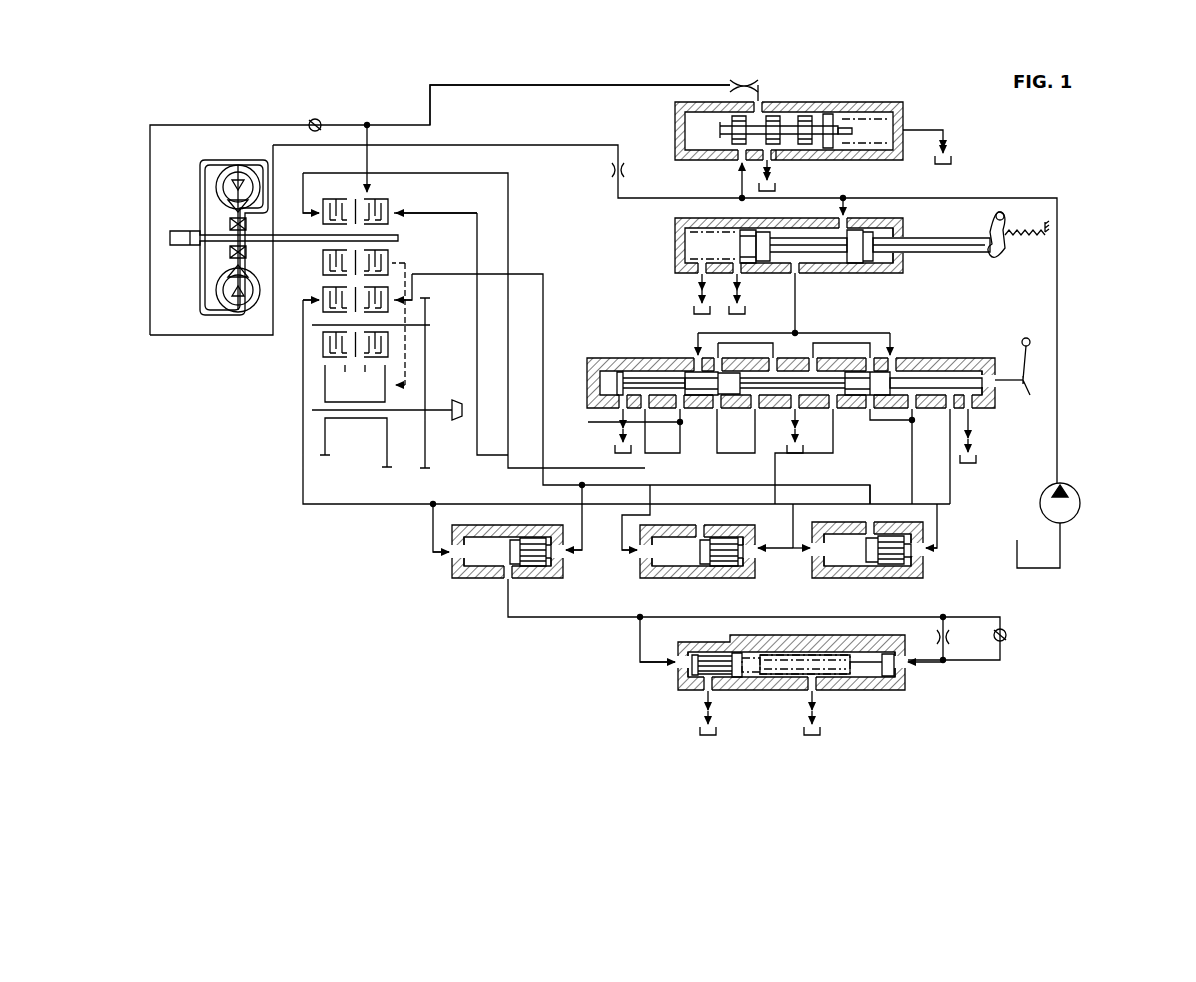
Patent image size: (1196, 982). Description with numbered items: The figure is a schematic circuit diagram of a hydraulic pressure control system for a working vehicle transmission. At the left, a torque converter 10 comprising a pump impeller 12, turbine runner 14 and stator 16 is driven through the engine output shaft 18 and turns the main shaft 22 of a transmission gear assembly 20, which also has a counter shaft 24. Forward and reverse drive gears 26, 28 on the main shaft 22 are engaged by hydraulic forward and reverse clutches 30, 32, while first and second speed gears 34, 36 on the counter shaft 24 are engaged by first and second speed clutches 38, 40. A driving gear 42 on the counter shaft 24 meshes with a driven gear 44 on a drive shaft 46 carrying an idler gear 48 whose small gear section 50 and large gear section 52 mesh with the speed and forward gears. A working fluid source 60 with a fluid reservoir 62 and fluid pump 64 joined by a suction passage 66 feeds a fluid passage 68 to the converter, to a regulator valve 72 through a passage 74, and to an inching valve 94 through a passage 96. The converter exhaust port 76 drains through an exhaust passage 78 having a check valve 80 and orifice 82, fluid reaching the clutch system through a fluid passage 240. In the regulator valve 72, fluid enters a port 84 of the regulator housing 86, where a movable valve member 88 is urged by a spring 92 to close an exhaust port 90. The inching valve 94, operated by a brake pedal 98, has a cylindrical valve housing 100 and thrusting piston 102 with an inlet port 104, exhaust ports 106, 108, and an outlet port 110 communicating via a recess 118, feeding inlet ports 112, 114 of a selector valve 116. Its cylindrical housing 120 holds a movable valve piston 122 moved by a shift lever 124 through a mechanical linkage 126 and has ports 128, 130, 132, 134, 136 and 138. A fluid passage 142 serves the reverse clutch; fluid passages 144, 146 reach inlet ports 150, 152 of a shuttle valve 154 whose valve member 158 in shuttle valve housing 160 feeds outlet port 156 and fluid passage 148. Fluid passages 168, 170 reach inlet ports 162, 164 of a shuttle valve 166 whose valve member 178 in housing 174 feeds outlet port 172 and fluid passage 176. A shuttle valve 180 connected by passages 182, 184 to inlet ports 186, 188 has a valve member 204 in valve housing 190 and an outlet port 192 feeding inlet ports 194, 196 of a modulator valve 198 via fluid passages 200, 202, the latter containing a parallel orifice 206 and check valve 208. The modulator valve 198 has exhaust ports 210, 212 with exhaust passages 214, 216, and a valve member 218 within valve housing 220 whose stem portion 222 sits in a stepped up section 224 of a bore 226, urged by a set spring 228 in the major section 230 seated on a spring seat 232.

The torque converter 10 is at (238, 150).
The pump impeller 12 is at (262, 300).
The turbine runner 14 is at (216, 186).
The stator 16 is at (226, 264).
The output shaft 18 is at (172, 243).
The transmission gear assembly 20 is at (386, 200).
The main shaft 22 is at (310, 243).
The counter shaft 24 is at (490, 354).
The forward drive gear 26 is at (394, 202).
The reverse drive gear 28 is at (304, 200).
The forward drive clutch 30 is at (372, 197).
The reverse drive clutch 32 is at (345, 200).
The first speed gear 34 is at (322, 316).
The second speed gear 36 is at (392, 298).
The first speed clutch 38 is at (355, 383).
The second speed clutch 40 is at (370, 358).
The driving gear 42 is at (428, 316).
The driven gear 44 is at (430, 386).
The drive shaft 46 is at (389, 422).
The idler gear 48 is at (358, 430).
The small gear section 50 is at (325, 432).
The large gear section 52 is at (388, 400).
The working fluid source 60 is at (1118, 528).
The fluid reservoir 62 is at (692, 308).
The fluid pump 64 is at (1081, 503).
The suction passage 66 is at (1040, 508).
The fluid passage 68 is at (565, 148).
The regulator valve 72 is at (820, 100).
The passage 74 is at (735, 186).
The exhaust port 76 is at (233, 262).
The exhaust passage 78 is at (250, 124).
The check valve 80 is at (318, 118).
The orifice 82 is at (744, 76).
The port 84 is at (770, 110).
The regulator housing 86 is at (876, 100).
The movable valve member 88 is at (790, 150).
The exhaust port 90 is at (770, 176).
The spring 92 is at (916, 126).
The inching valve 94 is at (910, 218).
The passage 96 is at (835, 236).
The brake pedal 98 is at (1012, 242).
The cylindrical valve housing 100 is at (885, 264).
The thrusting piston 102 is at (840, 264).
The inlet port 104 is at (848, 208).
The exhaust port 106 is at (744, 280).
The exhaust port 108 is at (696, 274).
The outlet port 110 is at (794, 314).
The inlet port 112 is at (690, 368).
The inlet port 114 is at (904, 360).
The selector valve 116 is at (865, 356).
The recess 118 is at (775, 232).
The cylindrical housing 120 is at (592, 372).
The movable valve piston 122 is at (642, 370).
The shift lever 124 is at (1035, 362).
The mechanical linkage 126 is at (1007, 368).
The forward drive port 128 is at (686, 430).
The reverse drive port 130 is at (913, 421).
The forward, first speed port 132 is at (648, 412).
The reverse, first speed port 134 is at (972, 416).
The forward second speed port 136 is at (722, 412).
The reverse, second speed port 138 is at (520, 326).
The fluid passage 142 is at (514, 410).
The fluid passage 144 is at (651, 500).
The fluid passage 146 is at (953, 478).
The fluid passage 148 is at (302, 470).
The inlet port 150 is at (646, 552).
The inlet port 152 is at (758, 554).
The shuttle valve 154 is at (742, 525).
The outlet port 156 is at (703, 524).
The valve member 158 is at (718, 568).
The shuttle valve housing 160 is at (656, 578).
The inlet port 162 is at (826, 534).
The inlet port 164 is at (930, 550).
The shuttle valve 166 is at (834, 580).
The fluid passage 168 is at (798, 496).
The fluid passage 170 is at (940, 505).
The outlet port 172 is at (882, 534).
The housing 174 is at (905, 566).
The fluid passage 176 is at (546, 330).
The valve member 178 is at (886, 565).
The shuttle valve 180 is at (490, 522).
The passage 182 is at (430, 532).
The passage 184 is at (584, 530).
The inlet port 186 is at (456, 556).
The inlet port 188 is at (556, 562).
The valve housing 190 is at (456, 580).
The outlet port 192 is at (510, 590).
The inlet port 194 is at (678, 672).
The inlet port 196 is at (944, 656).
The modulator valve 198 is at (780, 690).
The fluid passage 200 is at (675, 660).
The fluid passage 202 is at (778, 641).
The valve member 204 is at (528, 540).
The orifice 206 is at (976, 628).
The check valve 208 is at (1010, 636).
The exhaust port 210 is at (696, 690).
The exhaust port 212 is at (830, 689).
The exhaust passage 214 is at (711, 706).
The exhaust passage 216 is at (816, 716).
The valve member 218 is at (726, 646).
The valve housing 220 is at (900, 691).
The stem portion 222 is at (722, 654).
The stepped up section 224 is at (692, 655).
The bore 226 is at (830, 655).
The set spring 228 is at (895, 652).
The major section 230 is at (800, 720).
The spring seat 232 is at (906, 681).
The fluid passage 240 is at (370, 122).